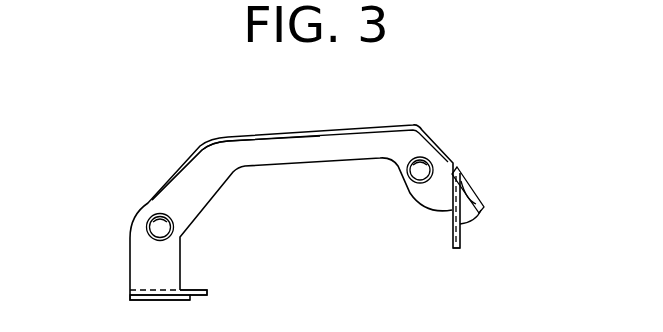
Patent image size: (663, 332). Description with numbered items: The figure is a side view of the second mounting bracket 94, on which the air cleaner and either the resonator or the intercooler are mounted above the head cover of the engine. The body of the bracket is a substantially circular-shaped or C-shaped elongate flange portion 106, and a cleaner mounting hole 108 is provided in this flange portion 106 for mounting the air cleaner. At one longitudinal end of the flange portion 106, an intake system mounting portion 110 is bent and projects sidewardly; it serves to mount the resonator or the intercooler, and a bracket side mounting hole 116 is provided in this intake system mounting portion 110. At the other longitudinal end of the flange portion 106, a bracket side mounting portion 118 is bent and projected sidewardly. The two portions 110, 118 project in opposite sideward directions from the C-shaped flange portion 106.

The second mounting bracket 94 is at (476, 134).
The flange portion 106 is at (277, 148).
The cleaner mounting hole 108 is at (155, 218).
The intake system mounting portion 110 is at (481, 205).
The bracket side mounting hole 116 is at (450, 233).
The bracket side mounting portion 118 is at (203, 288).